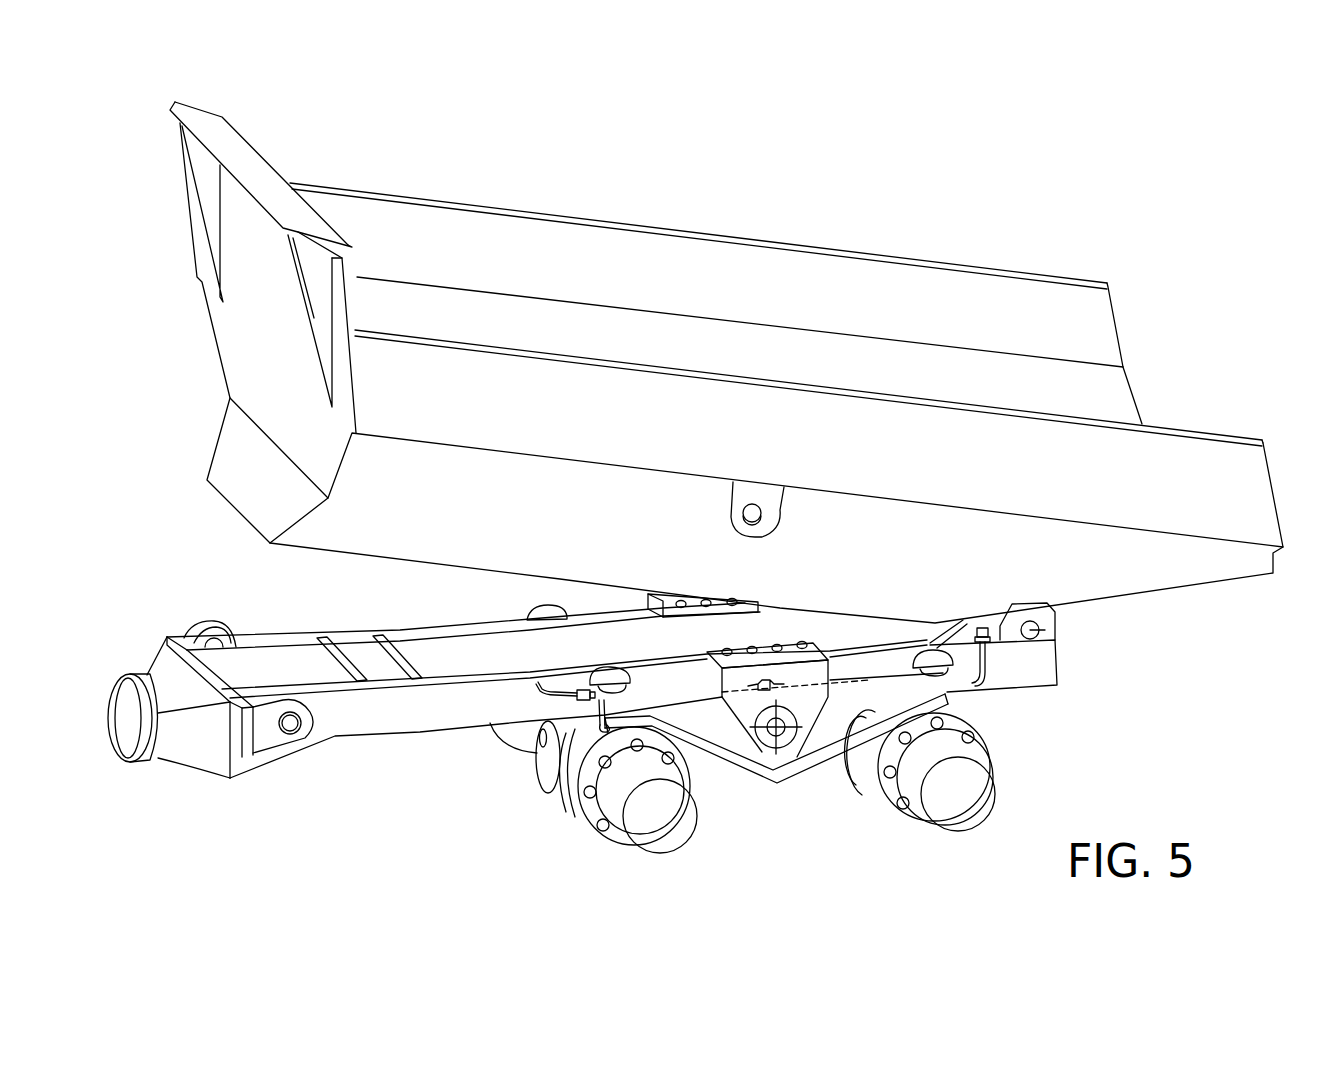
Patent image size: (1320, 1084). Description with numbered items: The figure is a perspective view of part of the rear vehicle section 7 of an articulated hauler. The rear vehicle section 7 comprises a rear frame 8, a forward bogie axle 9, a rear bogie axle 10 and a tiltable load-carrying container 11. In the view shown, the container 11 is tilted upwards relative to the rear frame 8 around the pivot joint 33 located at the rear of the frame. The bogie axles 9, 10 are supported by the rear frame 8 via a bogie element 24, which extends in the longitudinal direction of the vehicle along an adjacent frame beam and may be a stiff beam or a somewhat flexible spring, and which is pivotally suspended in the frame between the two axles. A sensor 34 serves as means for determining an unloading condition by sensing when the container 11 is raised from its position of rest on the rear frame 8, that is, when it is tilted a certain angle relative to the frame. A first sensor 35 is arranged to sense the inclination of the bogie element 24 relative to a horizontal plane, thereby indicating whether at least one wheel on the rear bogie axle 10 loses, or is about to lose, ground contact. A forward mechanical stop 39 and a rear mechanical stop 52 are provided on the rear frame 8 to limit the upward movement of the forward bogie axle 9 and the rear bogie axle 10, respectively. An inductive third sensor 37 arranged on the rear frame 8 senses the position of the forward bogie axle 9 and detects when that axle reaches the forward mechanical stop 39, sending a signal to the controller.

The rear vehicle section 7 is at (888, 222).
The container 11 is at (707, 250).
The rear frame 8 is at (383, 723).
The forward bogie axle 9 is at (672, 837).
The rear bogie axle 10 is at (980, 788).
The bogie element 24 is at (720, 723).
The first sensor 35 is at (812, 720).
The pivot joint 33 is at (1053, 630).
The sensor 34 is at (997, 650).
The rear mechanical stop 52 is at (988, 645).
The third sensor 37 is at (578, 697).
The forward mechanical stop 39 is at (528, 688).